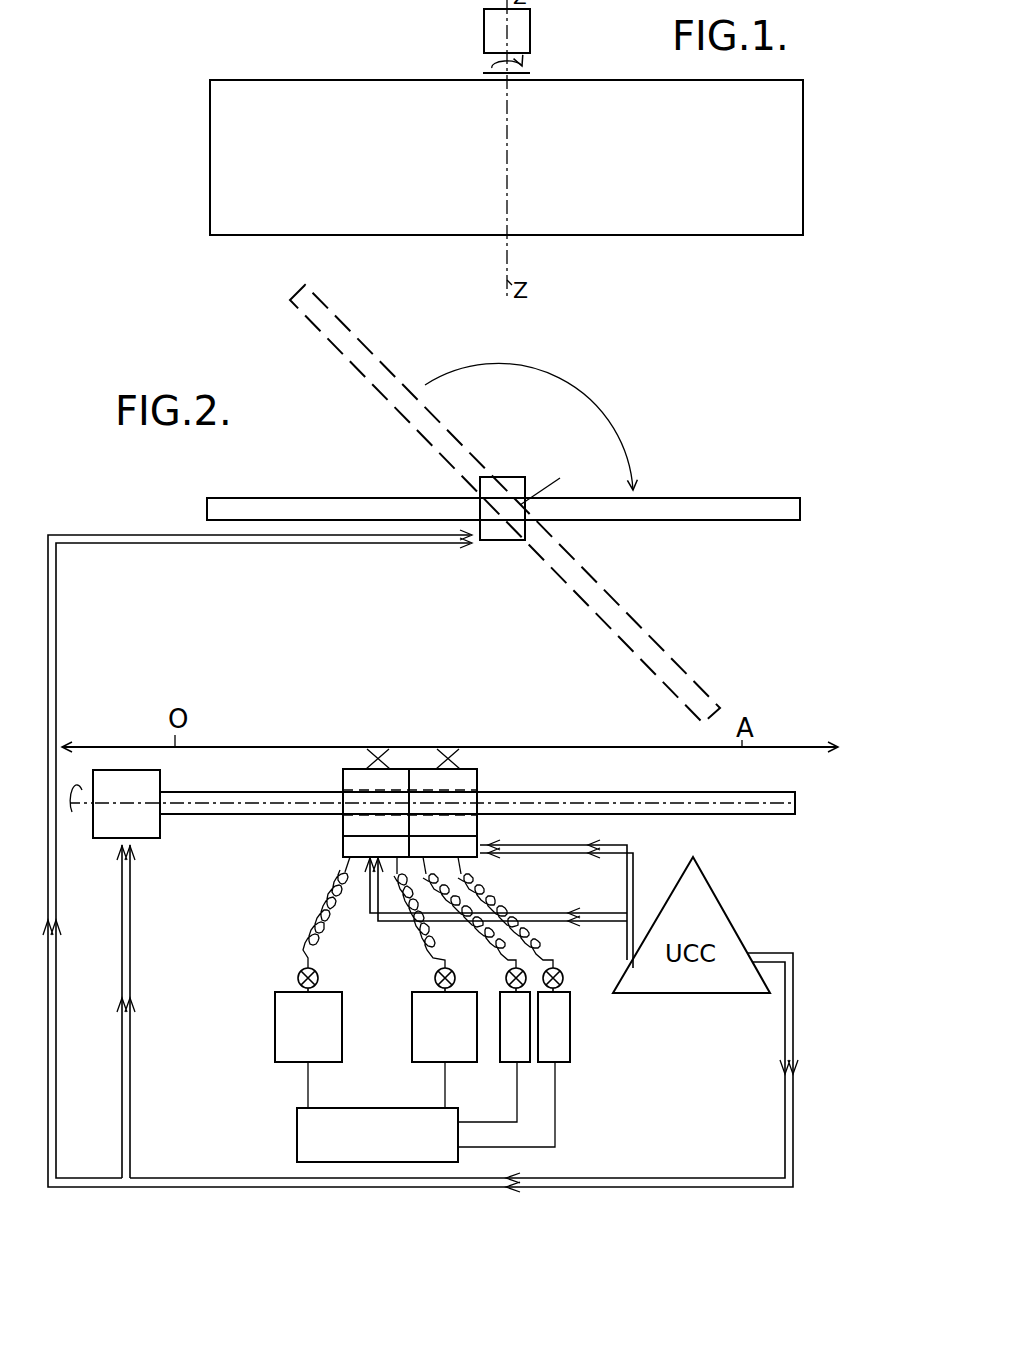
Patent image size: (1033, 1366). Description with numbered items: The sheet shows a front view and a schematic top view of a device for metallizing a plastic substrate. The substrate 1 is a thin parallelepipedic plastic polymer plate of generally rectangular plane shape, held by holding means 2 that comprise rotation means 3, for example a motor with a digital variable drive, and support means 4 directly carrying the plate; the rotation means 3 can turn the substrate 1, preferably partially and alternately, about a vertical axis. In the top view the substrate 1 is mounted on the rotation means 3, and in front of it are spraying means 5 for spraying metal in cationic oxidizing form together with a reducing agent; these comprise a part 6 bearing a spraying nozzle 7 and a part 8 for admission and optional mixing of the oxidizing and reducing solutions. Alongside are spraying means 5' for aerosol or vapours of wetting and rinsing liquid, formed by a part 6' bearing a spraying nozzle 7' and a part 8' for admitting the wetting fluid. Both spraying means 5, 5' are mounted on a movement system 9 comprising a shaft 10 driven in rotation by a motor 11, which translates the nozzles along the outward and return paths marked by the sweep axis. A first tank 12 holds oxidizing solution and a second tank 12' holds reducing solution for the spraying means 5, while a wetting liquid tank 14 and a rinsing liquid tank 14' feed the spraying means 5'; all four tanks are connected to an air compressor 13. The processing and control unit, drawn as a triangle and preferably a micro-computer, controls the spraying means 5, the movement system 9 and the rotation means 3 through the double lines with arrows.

In FIG. 1, the substrate 1 is at (733, 240).
In FIG. 2, the substrate 1 is at (714, 497).
In FIG. 1, the holding means 2 is at (535, 30).
In FIG. 2, the holding means 2 is at (499, 545).
In FIG. 1, the rotation means 3 is at (484, 35).
In FIG. 1, the support means 4 is at (530, 72).
In FIG. 2, the spraying means 5 is at (365, 816).
In FIG. 2, the spraying means for wetting and rinsing liquid 5' is at (499, 813).
In FIG. 2, the nozzle-bearing part 6 is at (348, 765).
In FIG. 2, the nozzle-bearing part of wetting/rinsing spraying means 6' is at (512, 771).
In FIG. 2, the spraying nozzle 7 is at (361, 727).
In FIG. 2, the spraying nozzle of wetting/rinsing spraying means 7' is at (488, 730).
In FIG. 2, the admission part 8 is at (350, 865).
In FIG. 2, the admission part of wetting/rinsing spraying means 8' is at (499, 866).
In FIG. 2, the movement system 9 is at (227, 816).
In FIG. 2, the shaft 10 is at (275, 795).
In FIG. 2, the motor 11 is at (108, 838).
In FIG. 2, the oxidizing solution tank 12 is at (277, 1027).
In FIG. 2, the reducing solution tank 12' is at (420, 1032).
In FIG. 2, the air compressor 13 is at (392, 1152).
In FIG. 2, the wetting liquid tank 14 is at (500, 1053).
In FIG. 2, the rinsing liquid tank 14' is at (595, 1033).